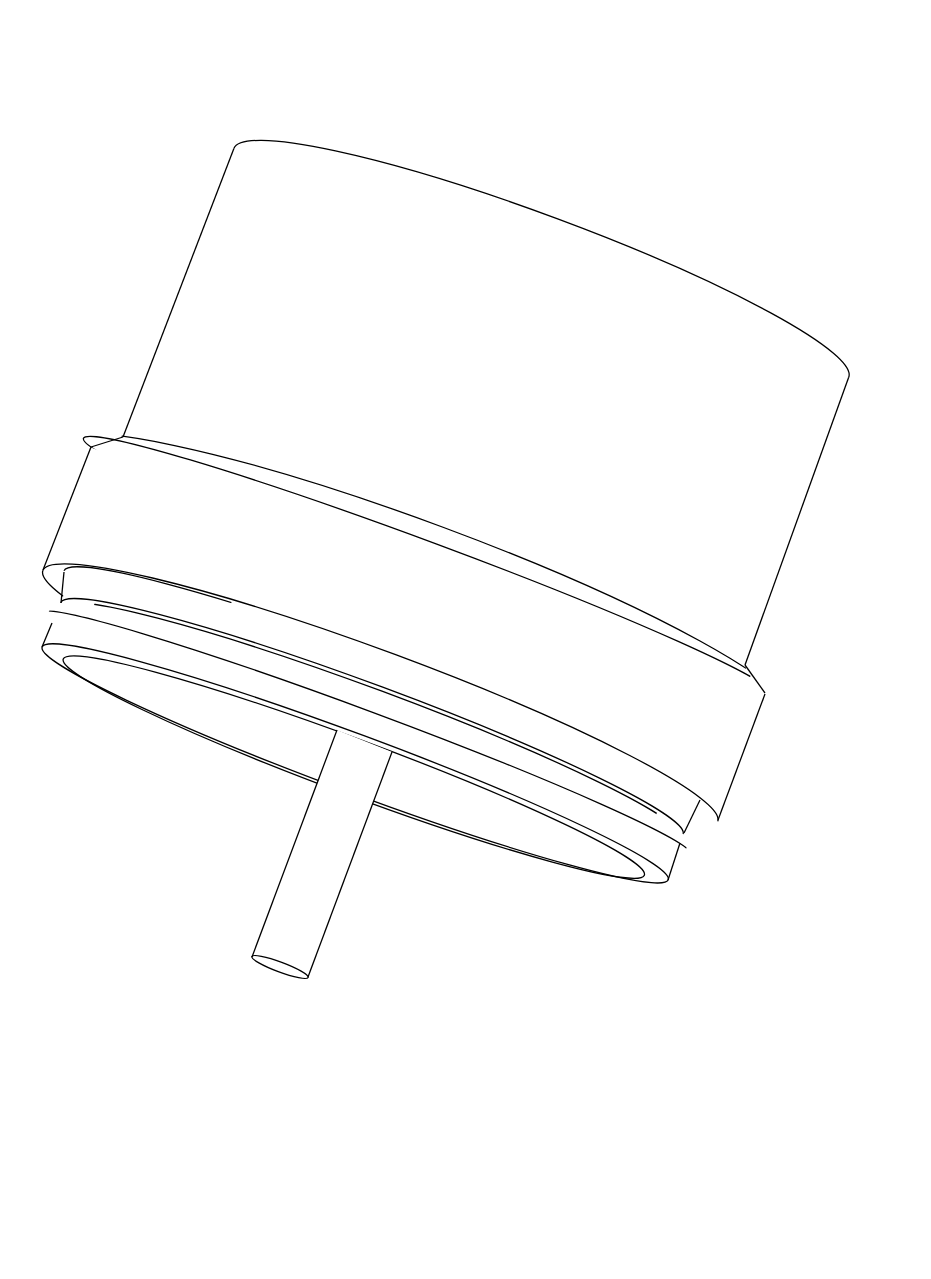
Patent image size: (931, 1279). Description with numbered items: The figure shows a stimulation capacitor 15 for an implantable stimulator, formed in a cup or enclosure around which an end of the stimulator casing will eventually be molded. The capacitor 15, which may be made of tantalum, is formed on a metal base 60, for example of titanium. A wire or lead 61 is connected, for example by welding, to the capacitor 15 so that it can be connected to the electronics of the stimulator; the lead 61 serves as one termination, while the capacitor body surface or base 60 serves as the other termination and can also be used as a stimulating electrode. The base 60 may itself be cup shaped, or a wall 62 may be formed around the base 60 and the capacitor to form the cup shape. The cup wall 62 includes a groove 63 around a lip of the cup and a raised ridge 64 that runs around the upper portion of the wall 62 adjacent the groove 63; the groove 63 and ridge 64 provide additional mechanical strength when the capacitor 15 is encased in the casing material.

The stimulation capacitor 15 is at (165, 138).
The metal base 60 is at (563, 221).
The wire or lead 61 is at (333, 907).
The wall 62 is at (215, 365).
The groove 63 is at (677, 840).
The raised ridge 64 is at (703, 727).